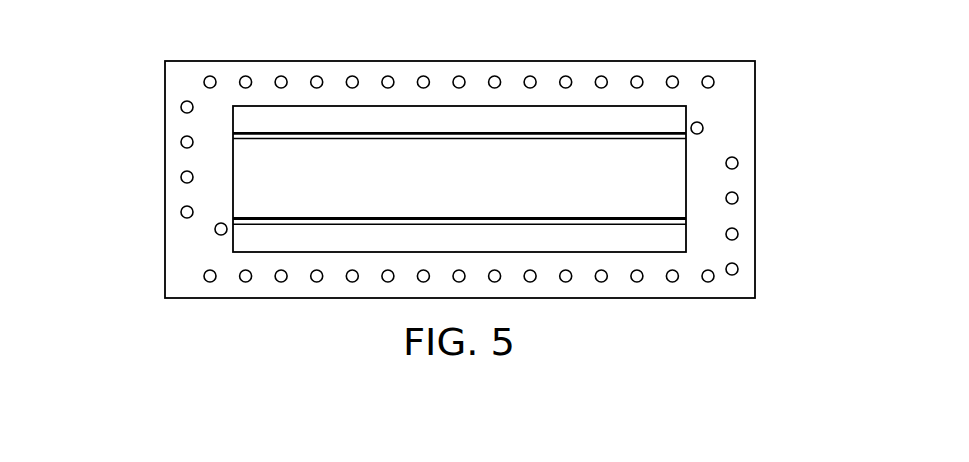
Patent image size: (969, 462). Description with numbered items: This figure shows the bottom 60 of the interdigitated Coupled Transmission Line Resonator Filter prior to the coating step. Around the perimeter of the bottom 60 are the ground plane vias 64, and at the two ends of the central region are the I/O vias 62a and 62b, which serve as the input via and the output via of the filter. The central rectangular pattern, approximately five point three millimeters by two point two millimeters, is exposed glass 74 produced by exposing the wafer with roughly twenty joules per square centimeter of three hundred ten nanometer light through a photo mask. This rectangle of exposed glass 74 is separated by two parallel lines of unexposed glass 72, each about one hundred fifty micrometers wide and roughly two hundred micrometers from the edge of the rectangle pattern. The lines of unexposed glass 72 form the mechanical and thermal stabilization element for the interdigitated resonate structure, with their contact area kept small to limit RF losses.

The bottom of the interdigitated Coupled Transmission Line Resonator Filter 60 is at (657, 68).
The I/O via 62a is at (213, 229).
The I/O via 62b is at (705, 128).
The ground plane vias 64 is at (741, 204).
The unexposed glass 72 is at (251, 216).
The exposed glass 74 is at (322, 116).